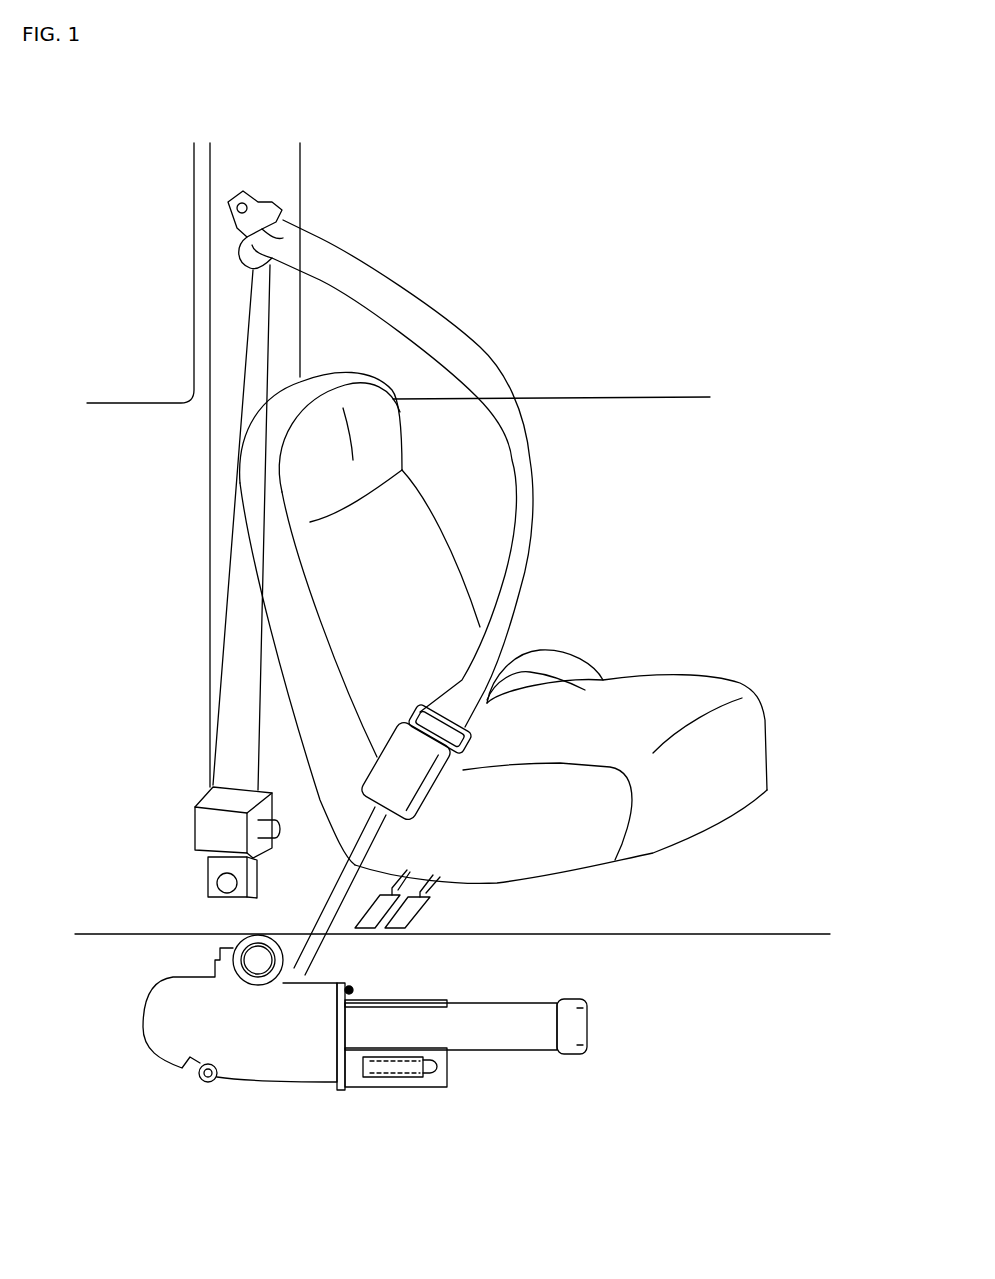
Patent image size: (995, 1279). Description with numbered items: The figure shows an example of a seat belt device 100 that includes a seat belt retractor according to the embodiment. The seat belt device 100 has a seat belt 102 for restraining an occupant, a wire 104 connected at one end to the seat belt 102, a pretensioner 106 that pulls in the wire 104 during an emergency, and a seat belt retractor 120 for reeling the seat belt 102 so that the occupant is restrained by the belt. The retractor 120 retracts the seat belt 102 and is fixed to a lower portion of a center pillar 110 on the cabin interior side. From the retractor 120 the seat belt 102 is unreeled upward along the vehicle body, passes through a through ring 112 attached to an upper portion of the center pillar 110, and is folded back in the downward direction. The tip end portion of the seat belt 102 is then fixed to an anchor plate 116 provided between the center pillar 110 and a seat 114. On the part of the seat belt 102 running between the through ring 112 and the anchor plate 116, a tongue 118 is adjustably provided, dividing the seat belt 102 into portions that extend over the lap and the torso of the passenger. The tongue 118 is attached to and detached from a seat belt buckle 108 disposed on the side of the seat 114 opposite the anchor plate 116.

The seat belt device 100 is at (532, 278).
The seat belt 102 is at (493, 387).
The wire 104 is at (297, 967).
The pretensioner 106 is at (308, 1067).
The seat belt buckle 108 is at (413, 797).
The center pillar 110 is at (223, 170).
The through ring 112 is at (277, 212).
The seat 114 is at (668, 683).
The anchor plate 116 is at (408, 908).
The tongue 118 is at (470, 738).
The seat belt retractor 120 is at (233, 822).